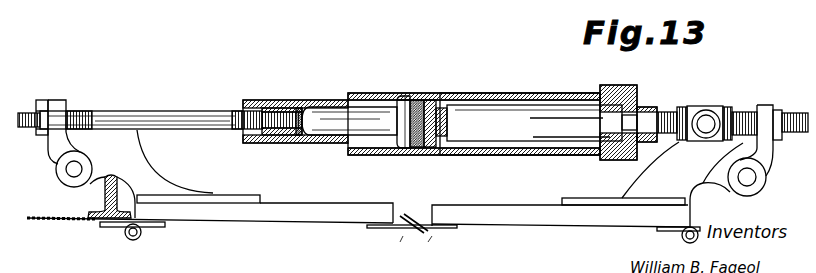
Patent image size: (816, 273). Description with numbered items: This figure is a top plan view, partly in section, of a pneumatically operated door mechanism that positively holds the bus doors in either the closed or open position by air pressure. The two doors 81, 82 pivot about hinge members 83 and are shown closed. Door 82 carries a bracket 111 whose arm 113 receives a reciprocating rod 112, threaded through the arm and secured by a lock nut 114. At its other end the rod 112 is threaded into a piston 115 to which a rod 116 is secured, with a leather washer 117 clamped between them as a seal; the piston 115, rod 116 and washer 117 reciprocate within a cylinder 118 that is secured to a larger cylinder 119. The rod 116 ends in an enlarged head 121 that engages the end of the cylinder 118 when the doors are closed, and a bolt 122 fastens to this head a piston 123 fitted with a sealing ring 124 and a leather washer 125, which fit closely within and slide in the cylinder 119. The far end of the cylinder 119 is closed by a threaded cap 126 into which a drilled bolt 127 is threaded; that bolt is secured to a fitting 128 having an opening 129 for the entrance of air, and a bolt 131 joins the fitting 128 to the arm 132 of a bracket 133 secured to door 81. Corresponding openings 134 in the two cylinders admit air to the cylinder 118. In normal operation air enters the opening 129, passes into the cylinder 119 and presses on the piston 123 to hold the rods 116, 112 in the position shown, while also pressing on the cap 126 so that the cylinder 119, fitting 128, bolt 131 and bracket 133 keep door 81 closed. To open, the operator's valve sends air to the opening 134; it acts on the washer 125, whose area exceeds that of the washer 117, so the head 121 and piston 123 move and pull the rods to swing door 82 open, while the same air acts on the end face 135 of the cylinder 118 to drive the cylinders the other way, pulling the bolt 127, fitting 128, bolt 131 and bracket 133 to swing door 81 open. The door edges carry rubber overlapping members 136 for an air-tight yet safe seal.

The door 81 is at (542, 217).
The door 82 is at (345, 217).
The hinge member 83 is at (133, 240).
The bracket 111 is at (148, 178).
The reciprocating rod 112 is at (167, 118).
The arm 113 is at (57, 108).
The lock nut 114 is at (43, 100).
The piston 115 is at (260, 100).
The rod 116 is at (330, 117).
The leather washer 117 is at (302, 100).
The cylinder 118 is at (315, 143).
The cylinder 119 is at (537, 96).
The enlarged head 121 is at (410, 150).
The bolt 122 is at (534, 123).
The piston 123 is at (440, 98).
The sealing ring 124 is at (428, 98).
The leather washer 125 is at (408, 97).
The threaded cap 126 is at (637, 112).
The drilled bolt 127 is at (665, 118).
The fitting 128 is at (700, 110).
The opening 129 is at (717, 117).
The bolt 131 is at (747, 113).
The arm 132 is at (762, 155).
The bracket 133 is at (668, 185).
The opening 134 is at (372, 96).
The end face 135 is at (398, 150).
The rubber overlapping member 136 is at (436, 228).